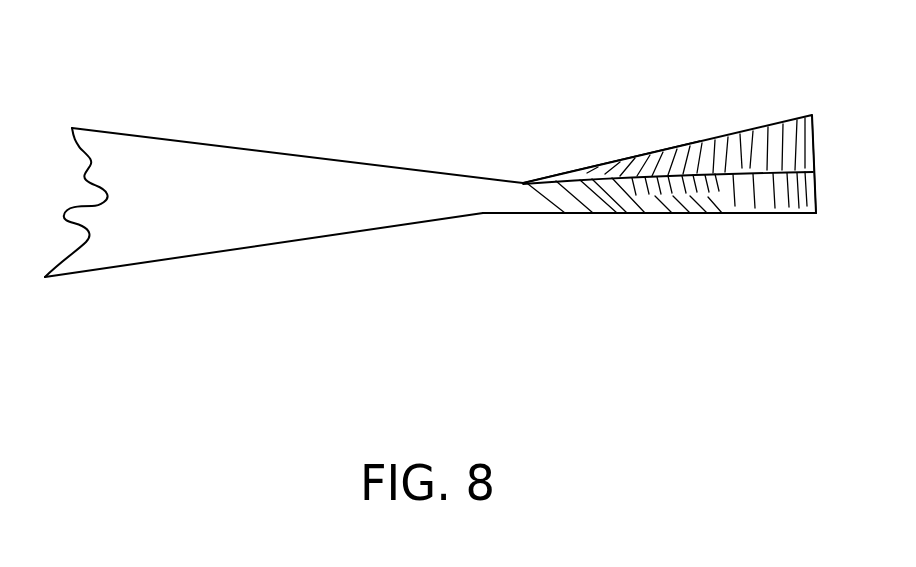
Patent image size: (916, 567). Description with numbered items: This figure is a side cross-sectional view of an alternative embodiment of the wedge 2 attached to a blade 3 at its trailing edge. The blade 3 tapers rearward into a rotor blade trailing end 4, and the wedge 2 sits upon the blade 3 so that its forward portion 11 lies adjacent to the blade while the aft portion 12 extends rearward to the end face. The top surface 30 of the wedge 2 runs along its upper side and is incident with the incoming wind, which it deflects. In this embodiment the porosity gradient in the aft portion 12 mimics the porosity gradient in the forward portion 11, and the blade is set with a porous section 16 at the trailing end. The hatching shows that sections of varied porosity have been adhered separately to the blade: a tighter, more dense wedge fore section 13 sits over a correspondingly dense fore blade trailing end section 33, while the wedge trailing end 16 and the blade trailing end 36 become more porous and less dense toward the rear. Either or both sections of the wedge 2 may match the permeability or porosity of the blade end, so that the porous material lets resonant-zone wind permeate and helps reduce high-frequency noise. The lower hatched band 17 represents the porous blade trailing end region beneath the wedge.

The blade 3 is at (407, 170).
The forward portion 11 is at (533, 168).
The wedge 2 is at (580, 152).
The wedge fore section 13 is at (612, 160).
The wedge trailing end 16 is at (755, 138).
The top surface 30 is at (757, 125).
The aft portion 12 is at (826, 147).
The fore blade trailing end section 33 is at (585, 202).
The rotor blade trailing end 4 is at (640, 213).
The lower layer 17 is at (752, 212).
The blade trailing end 36 is at (790, 213).